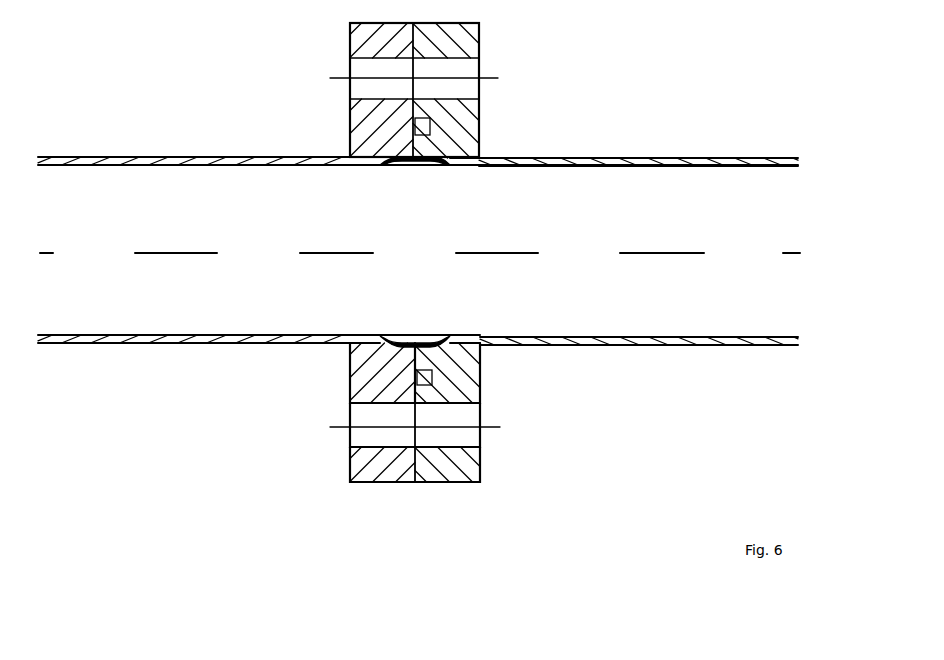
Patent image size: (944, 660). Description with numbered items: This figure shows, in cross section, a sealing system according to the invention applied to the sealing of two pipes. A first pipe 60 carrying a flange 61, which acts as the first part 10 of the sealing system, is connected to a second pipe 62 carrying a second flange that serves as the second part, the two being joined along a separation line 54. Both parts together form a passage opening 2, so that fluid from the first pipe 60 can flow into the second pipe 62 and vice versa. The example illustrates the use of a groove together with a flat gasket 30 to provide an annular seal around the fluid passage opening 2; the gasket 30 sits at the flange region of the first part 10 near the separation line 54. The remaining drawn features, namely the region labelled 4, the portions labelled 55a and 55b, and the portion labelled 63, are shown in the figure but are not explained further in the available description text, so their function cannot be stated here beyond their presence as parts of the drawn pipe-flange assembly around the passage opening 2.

The passage opening 2 is at (406, 262).
The fiber in upper block 4 is at (431, 128).
The first part 10 is at (418, 365).
The flat gasket 30 is at (432, 378).
The separation line 54 is at (423, 481).
The upper block 55a is at (473, 67).
The lower block 55b is at (475, 437).
The first pipe 60 is at (265, 345).
The flange 61 is at (360, 377).
The second pipe 62 is at (612, 346).
The lower block right half 63 is at (473, 366).